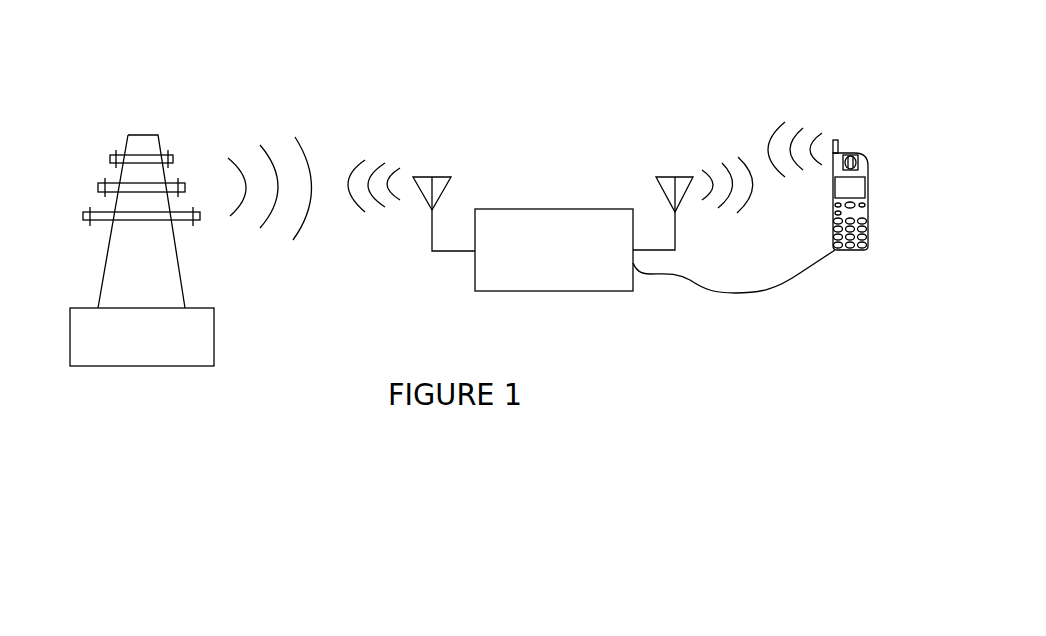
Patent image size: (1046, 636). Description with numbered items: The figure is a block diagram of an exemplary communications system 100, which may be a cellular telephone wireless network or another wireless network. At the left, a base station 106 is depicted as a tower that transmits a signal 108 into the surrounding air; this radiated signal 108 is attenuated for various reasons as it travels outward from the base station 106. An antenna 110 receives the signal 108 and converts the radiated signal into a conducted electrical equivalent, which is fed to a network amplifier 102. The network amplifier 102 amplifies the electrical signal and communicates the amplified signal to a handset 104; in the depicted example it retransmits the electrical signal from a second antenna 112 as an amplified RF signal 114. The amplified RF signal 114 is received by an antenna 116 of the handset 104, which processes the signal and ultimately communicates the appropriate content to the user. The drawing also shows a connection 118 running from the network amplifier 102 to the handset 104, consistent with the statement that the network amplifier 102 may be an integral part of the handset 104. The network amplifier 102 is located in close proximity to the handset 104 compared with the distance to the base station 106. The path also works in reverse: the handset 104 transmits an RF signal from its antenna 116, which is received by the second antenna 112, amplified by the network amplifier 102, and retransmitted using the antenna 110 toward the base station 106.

The communications system 100 is at (560, 108).
The network amplifier 102 is at (565, 209).
The handset 104 is at (868, 170).
The base station 106 is at (143, 135).
The signal 108 is at (298, 140).
The antenna 110 is at (433, 178).
The second antenna 112 is at (662, 177).
The amplified RF signal 114 is at (720, 165).
The antenna of handset 116 is at (838, 140).
The wired connection 118 is at (795, 278).